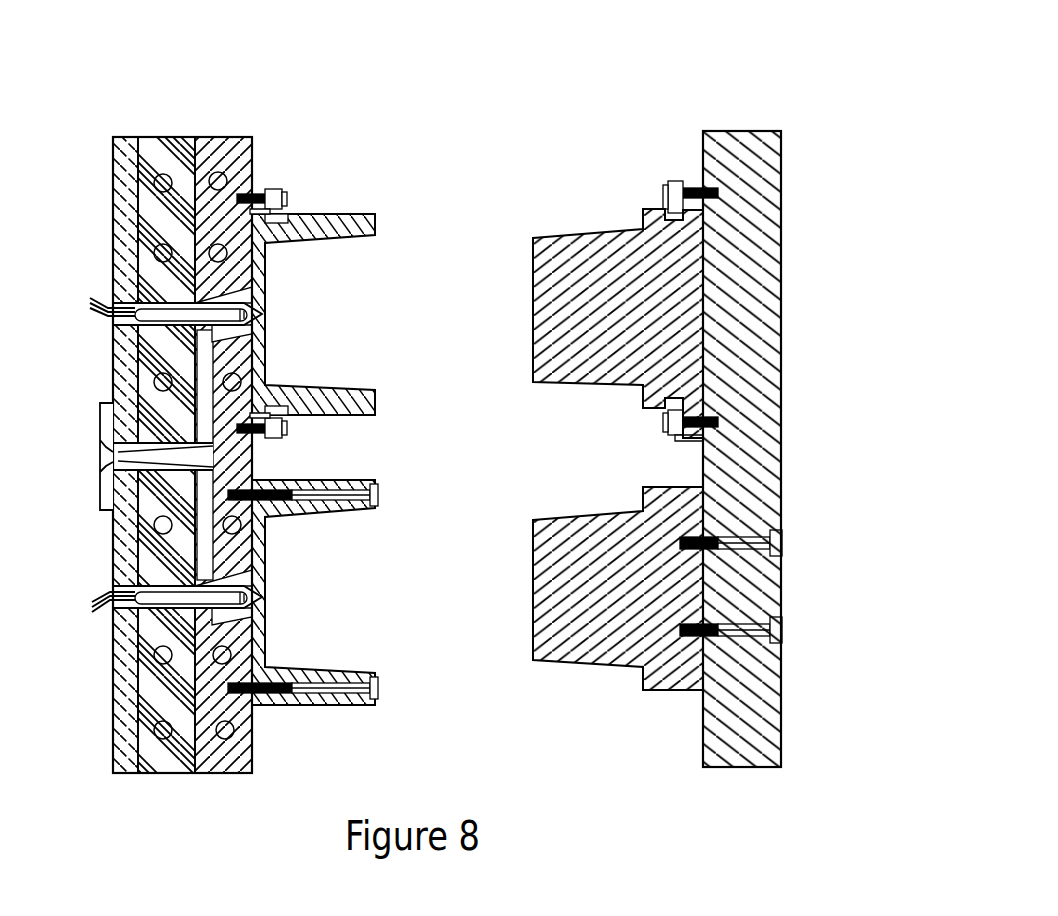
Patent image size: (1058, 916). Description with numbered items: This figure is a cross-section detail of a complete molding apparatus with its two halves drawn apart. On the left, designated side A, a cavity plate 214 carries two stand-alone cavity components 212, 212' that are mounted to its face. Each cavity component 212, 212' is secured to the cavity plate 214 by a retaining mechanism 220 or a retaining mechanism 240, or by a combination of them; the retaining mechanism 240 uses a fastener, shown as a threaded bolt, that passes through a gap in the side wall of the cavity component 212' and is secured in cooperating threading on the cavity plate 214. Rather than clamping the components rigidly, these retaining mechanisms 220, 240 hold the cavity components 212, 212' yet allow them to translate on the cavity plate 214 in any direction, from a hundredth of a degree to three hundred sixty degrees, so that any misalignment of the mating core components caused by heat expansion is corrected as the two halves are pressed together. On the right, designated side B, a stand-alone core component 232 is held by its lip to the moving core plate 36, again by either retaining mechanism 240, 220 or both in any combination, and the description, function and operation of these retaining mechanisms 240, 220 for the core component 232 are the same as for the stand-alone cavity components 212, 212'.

The cavity plate 214 is at (238, 135).
The mold half A is at (152, 130).
The stand-alone cavity component 212 is at (366, 273).
The stand-alone cavity component 212' is at (356, 553).
The retaining mechanism 220 is at (290, 186).
The retaining mechanism 240 is at (380, 492).
The moving core plate 36 is at (712, 130).
The mold half B is at (790, 212).
The stand-alone core component 232 is at (600, 232).